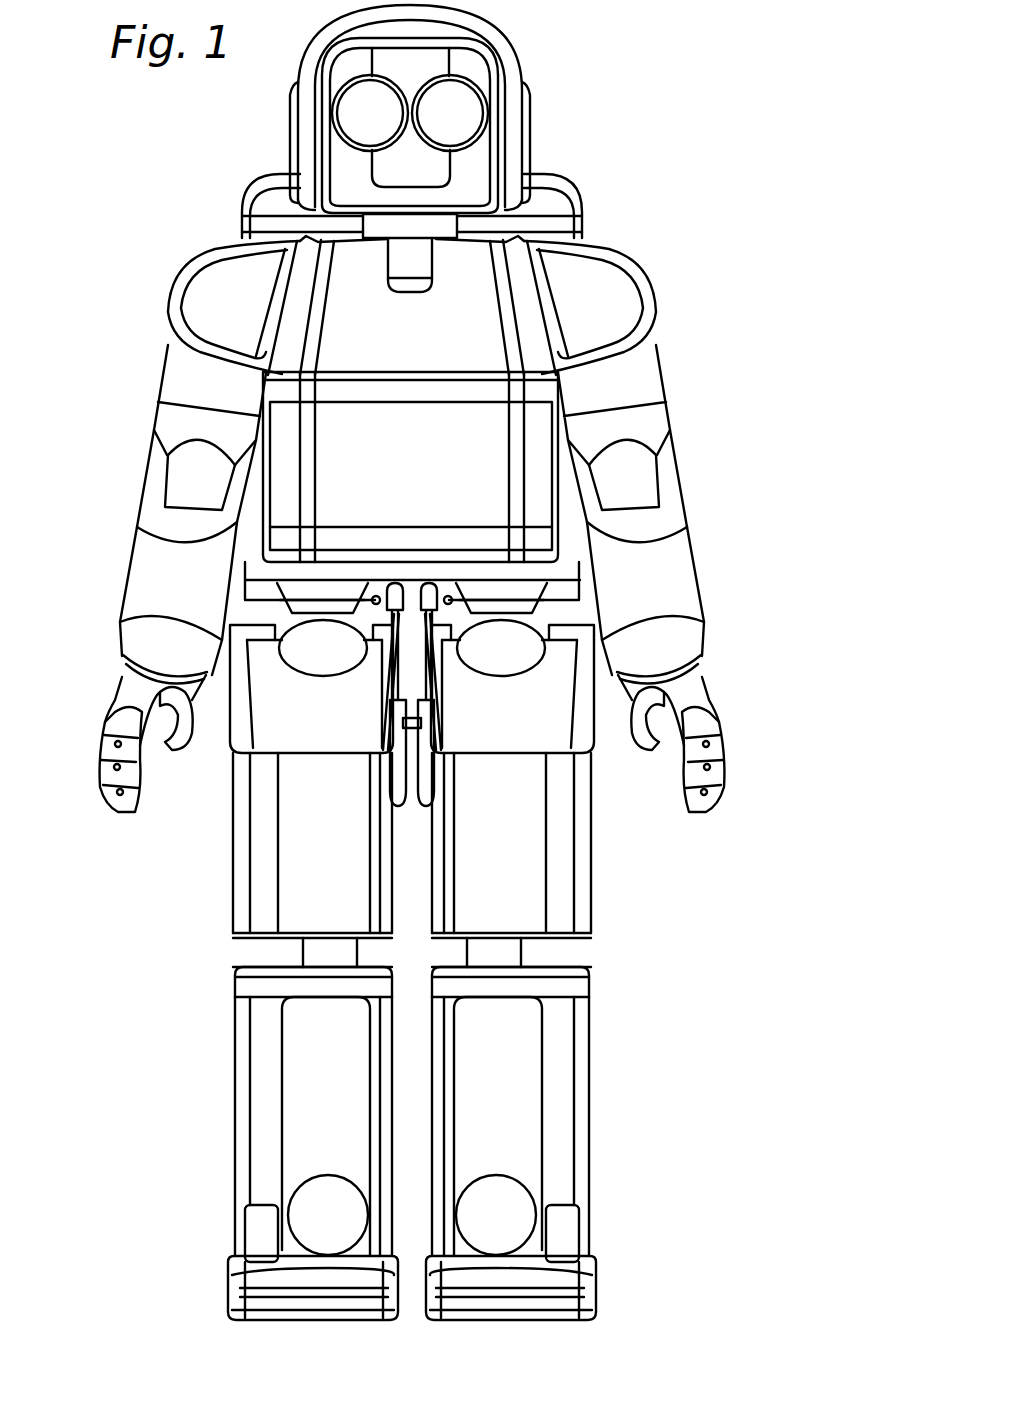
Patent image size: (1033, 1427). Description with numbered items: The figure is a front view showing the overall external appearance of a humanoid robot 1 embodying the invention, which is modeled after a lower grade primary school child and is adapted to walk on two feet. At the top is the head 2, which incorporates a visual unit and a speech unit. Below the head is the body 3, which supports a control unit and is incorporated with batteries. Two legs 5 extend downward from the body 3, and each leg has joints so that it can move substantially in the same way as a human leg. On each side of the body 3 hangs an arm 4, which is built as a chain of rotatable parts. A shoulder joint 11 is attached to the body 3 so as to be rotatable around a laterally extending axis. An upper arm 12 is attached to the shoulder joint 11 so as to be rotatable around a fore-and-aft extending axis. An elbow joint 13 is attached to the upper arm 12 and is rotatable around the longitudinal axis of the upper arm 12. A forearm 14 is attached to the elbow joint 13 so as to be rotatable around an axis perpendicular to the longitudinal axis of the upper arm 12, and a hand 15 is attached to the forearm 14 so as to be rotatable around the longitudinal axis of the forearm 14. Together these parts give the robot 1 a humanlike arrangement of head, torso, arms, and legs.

The robot 1 is at (662, 134).
The head 2 is at (512, 66).
The body 3 is at (420, 494).
The arm 4 is at (138, 470).
The leg 5 is at (232, 900).
The shoulder joint 11 is at (633, 296).
The upper arm 12 is at (655, 376).
The elbow joint 13 is at (676, 472).
The forearm 14 is at (693, 570).
The hand 15 is at (704, 688).